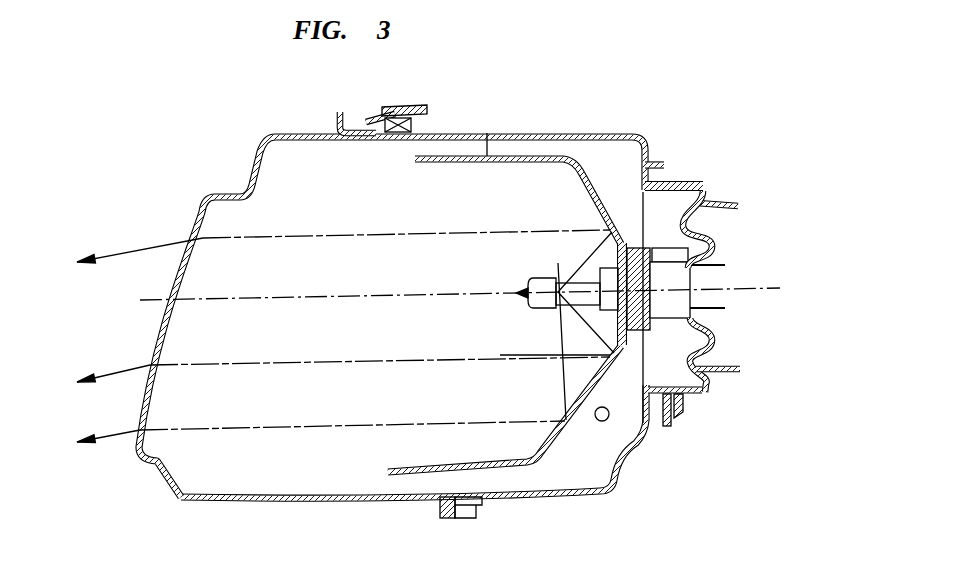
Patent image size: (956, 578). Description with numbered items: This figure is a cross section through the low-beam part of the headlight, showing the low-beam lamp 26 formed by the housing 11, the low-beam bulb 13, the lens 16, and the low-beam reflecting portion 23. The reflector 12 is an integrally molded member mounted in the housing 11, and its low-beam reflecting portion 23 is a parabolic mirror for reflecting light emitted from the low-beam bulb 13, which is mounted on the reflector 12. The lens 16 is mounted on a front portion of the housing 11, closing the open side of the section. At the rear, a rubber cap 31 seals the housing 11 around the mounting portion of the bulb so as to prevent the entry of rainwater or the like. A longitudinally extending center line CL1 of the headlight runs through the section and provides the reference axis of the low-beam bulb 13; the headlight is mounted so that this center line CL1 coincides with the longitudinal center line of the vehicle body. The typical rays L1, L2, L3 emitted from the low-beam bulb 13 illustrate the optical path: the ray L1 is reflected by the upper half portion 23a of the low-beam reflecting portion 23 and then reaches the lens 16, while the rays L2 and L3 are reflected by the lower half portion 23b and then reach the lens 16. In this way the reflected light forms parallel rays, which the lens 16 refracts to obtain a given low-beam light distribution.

The housing 11 is at (663, 137).
The reflector 12 is at (487, 158).
The low-beam bulb 13 is at (528, 286).
The lens 16 is at (192, 206).
The low-beam reflecting portion 23 is at (519, 266).
The upper half portion 23a is at (594, 203).
The lower half portion 23b is at (557, 430).
The low-beam lamp 26 is at (194, 142).
The rubber cap 31 is at (704, 182).
The ray of light L1 is at (372, 234).
The ray of light L2 is at (388, 361).
The ray of light L3 is at (388, 423).
The center line CL1 is at (756, 288).